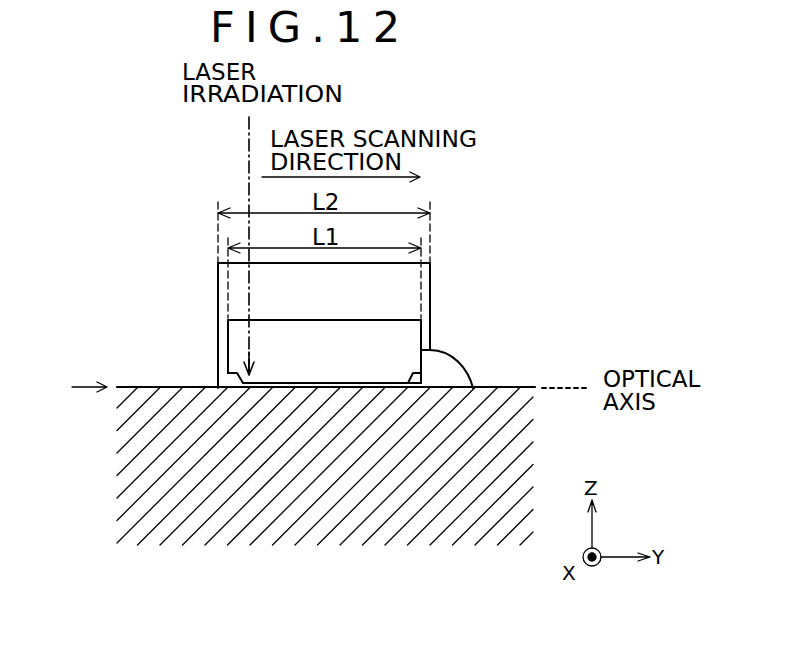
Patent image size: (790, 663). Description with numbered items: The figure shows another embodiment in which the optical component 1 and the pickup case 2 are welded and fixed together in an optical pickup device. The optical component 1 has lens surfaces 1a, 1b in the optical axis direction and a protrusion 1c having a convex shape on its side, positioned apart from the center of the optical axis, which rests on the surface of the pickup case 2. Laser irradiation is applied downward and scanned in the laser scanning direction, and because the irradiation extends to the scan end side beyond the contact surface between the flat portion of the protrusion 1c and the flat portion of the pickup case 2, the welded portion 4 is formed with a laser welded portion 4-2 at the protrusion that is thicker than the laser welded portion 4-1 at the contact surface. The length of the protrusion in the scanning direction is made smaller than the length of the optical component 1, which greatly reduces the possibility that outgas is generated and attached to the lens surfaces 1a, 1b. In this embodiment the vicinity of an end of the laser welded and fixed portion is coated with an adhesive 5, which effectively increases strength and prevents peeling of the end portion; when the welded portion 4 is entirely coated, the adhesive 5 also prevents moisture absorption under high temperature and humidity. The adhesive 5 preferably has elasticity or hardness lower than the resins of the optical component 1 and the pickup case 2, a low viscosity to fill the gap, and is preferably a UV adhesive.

The optical component 1 is at (409, 282).
The lens surface 1a is at (399, 318).
The lens surface 1b is at (262, 317).
The protrusion 1c is at (228, 348).
The pickup case 2 is at (142, 461).
The welded portion 4 is at (377, 468).
The laser welded portion 4-1 is at (303, 385).
The laser welded portion 4-2 is at (423, 383).
The adhesive 5 is at (437, 362).